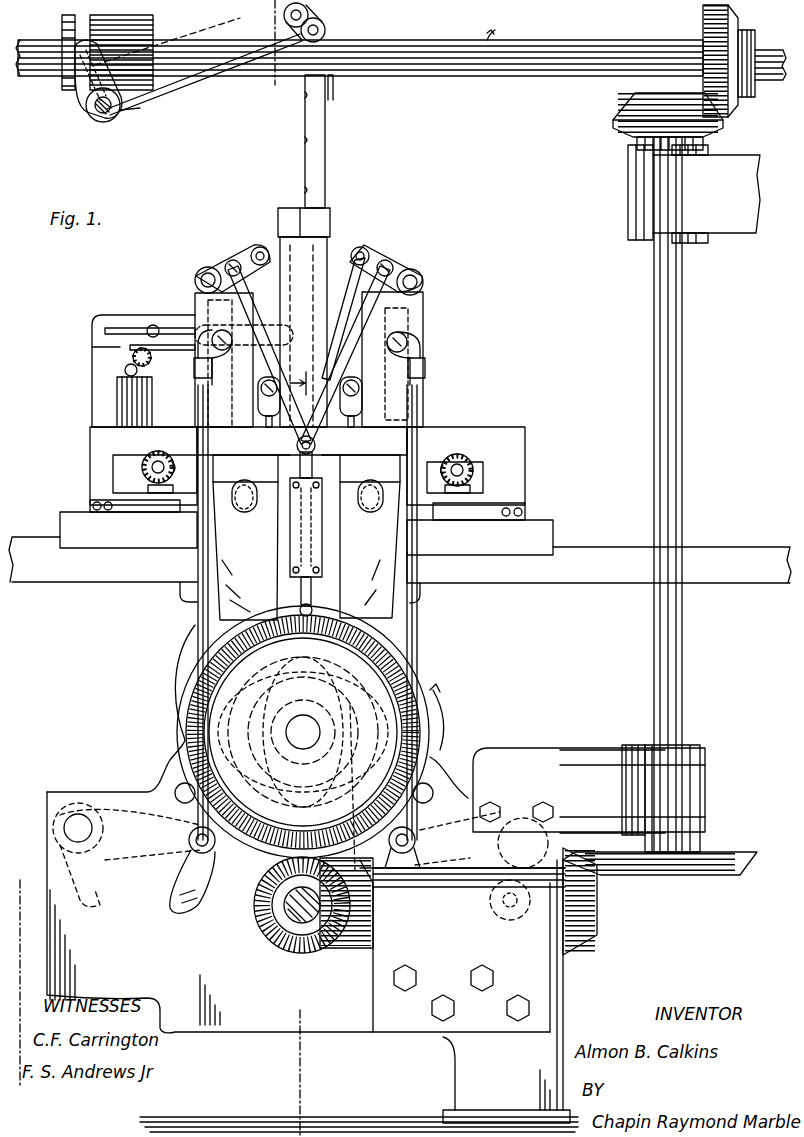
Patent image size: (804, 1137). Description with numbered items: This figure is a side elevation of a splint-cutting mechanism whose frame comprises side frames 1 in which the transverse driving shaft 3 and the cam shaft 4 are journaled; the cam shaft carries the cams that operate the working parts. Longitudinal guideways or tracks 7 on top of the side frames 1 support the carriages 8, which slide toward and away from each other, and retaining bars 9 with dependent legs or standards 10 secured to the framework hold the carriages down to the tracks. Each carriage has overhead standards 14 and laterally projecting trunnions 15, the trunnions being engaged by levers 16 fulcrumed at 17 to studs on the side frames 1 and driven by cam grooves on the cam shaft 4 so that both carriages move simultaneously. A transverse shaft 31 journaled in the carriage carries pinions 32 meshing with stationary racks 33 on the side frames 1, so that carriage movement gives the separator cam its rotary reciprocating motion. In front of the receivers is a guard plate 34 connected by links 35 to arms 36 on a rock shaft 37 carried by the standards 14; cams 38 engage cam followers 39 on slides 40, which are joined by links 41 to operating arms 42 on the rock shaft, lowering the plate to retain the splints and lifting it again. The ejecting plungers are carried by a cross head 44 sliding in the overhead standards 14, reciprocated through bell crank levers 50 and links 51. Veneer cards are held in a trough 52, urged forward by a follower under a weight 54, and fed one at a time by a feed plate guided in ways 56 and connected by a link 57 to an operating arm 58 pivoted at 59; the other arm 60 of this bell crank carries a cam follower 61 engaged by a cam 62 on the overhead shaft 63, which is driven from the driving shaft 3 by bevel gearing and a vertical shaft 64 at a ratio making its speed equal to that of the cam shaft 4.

The side frames 1 is at (572, 970).
The driving shaft 3 is at (287, 35).
The cam shaft 4 is at (303, 732).
The longitudinal guideways or tracks 7 is at (138, 520).
The carriages 8 is at (306, 468).
The retaining bars 9 is at (326, 441).
The dependent legs or standards 10 is at (528, 490).
The overhead standards 14 is at (196, 303).
The trunnions 15 is at (248, 508).
The levers 16 is at (306, 551).
The fulcrum 17 is at (195, 650).
The transverse shaft 31 is at (158, 462).
The pinions 32 is at (145, 472).
The stationary racks 33 is at (168, 495).
The guard plate 34 is at (266, 418).
The links 35 is at (265, 282).
The arms 36 is at (256, 248).
The rock shaft 37 is at (196, 277).
The cams 38 is at (415, 732).
The cam followers 39 is at (306, 617).
The slides 40 is at (320, 450).
The links 41 is at (336, 336).
The operating arms 42 is at (228, 260).
The cross head 44 is at (206, 380).
The bell crank levers 50 is at (195, 853).
The links 51 is at (195, 567).
The trough 52 is at (115, 320).
The weight 54 is at (115, 395).
The ways 56 is at (326, 145).
The link 57 is at (318, 20).
The operating arm 58 is at (140, 112).
The pivot 59 is at (93, 108).
The arm 60 is at (190, 90).
The cam follower 61 is at (125, 55).
The cam 62 is at (130, 30).
The overhead shaft 63 is at (548, 48).
The vertical shaft 64 is at (680, 347).